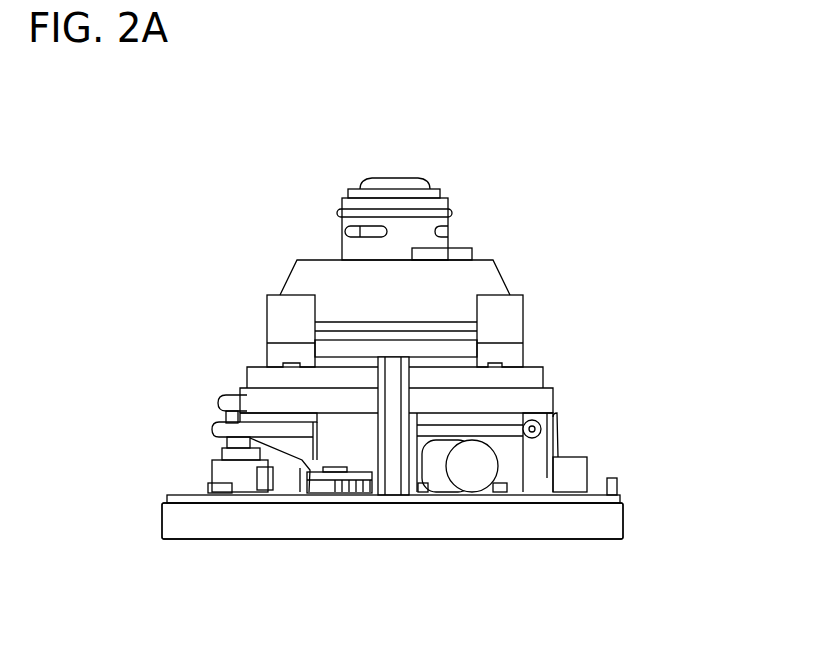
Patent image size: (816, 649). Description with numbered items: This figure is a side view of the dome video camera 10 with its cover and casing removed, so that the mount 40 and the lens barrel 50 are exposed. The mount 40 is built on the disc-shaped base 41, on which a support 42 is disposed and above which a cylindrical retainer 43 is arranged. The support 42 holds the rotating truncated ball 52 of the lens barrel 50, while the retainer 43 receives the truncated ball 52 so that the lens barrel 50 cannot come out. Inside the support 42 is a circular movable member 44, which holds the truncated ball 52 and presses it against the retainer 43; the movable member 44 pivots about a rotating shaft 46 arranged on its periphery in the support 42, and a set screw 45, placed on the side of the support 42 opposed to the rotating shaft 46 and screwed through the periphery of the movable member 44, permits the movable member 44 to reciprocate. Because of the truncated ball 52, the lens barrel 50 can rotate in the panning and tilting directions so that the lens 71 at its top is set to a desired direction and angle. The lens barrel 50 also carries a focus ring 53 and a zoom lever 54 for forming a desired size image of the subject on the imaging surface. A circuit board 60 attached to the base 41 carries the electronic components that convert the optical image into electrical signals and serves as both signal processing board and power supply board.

The dome video camera 10 is at (299, 132).
The lens 71 is at (400, 180).
The lens barrel 50 is at (415, 222).
The truncated ball 52 is at (473, 270).
The focus ring 53 is at (337, 212).
The zoom lever 54 is at (338, 232).
The retainer 43 is at (507, 327).
The support 42 is at (540, 401).
The set screw 45 is at (230, 397).
The movable member 44 is at (215, 430).
The rotating shaft 46 is at (543, 430).
The circuit board 60 is at (605, 495).
The mount 40 is at (567, 522).
The base 41 is at (392, 521).